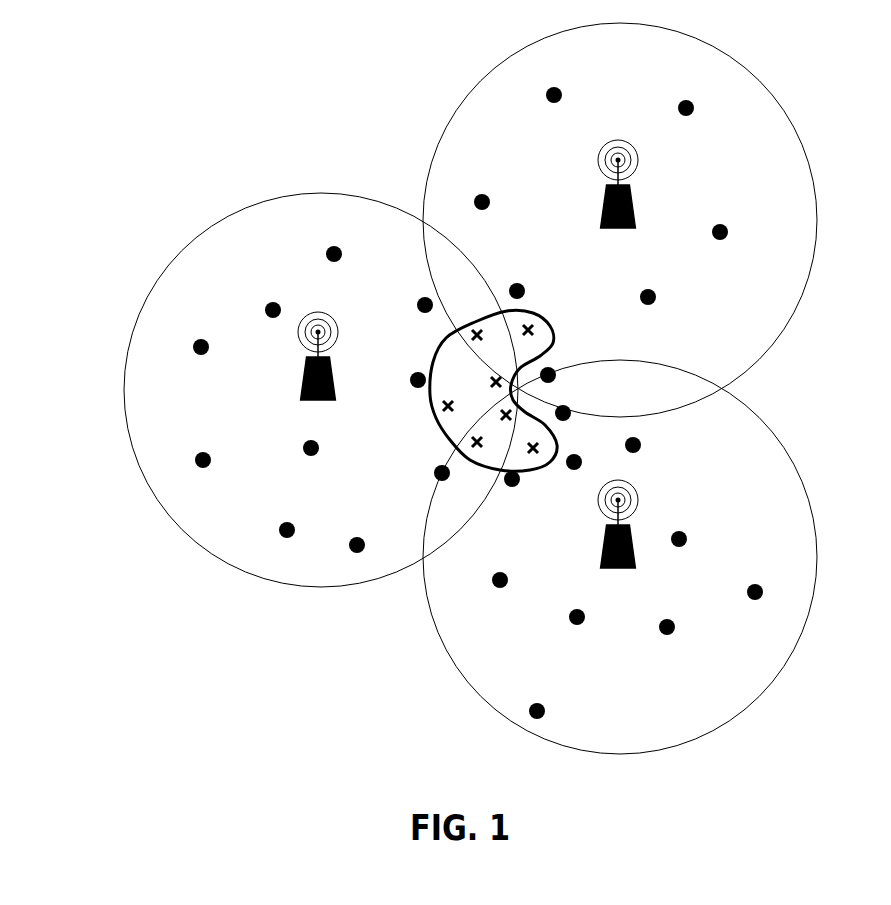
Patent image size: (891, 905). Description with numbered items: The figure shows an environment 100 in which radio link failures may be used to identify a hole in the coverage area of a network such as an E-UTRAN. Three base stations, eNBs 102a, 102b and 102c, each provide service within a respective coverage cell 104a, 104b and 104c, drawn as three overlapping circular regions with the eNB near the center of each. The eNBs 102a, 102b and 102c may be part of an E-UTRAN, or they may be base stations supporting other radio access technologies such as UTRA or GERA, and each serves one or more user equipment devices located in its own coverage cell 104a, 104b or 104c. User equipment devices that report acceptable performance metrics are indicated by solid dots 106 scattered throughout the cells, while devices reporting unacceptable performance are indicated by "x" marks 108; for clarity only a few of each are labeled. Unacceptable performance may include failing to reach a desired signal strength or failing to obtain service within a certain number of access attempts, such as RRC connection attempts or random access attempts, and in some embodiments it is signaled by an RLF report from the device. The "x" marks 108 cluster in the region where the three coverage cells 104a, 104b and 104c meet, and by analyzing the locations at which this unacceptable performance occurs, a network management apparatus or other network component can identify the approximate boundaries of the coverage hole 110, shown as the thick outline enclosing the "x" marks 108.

The environment 100 is at (199, 85).
The eNB 102a is at (285, 356).
The eNB 102b is at (585, 184).
The eNB 102c is at (585, 524).
The coverage cell 104a is at (321, 390).
The coverage cell 104b is at (595, 220).
The coverage cell 104c is at (644, 557).
The solid dots 106 is at (452, 403).
The "x" marks 108 is at (501, 370).
The coverage hole 110 is at (462, 390).